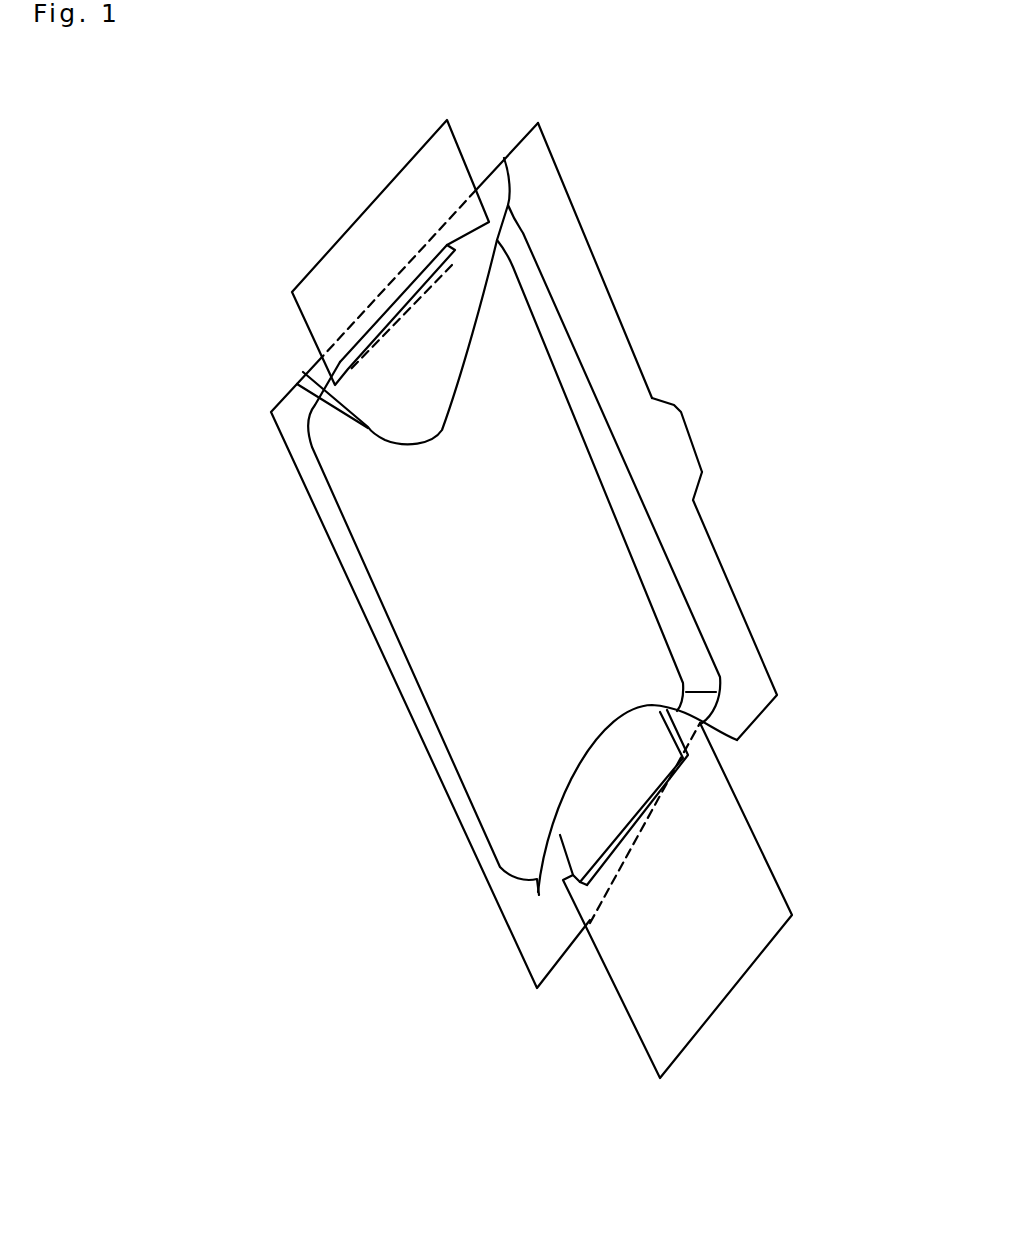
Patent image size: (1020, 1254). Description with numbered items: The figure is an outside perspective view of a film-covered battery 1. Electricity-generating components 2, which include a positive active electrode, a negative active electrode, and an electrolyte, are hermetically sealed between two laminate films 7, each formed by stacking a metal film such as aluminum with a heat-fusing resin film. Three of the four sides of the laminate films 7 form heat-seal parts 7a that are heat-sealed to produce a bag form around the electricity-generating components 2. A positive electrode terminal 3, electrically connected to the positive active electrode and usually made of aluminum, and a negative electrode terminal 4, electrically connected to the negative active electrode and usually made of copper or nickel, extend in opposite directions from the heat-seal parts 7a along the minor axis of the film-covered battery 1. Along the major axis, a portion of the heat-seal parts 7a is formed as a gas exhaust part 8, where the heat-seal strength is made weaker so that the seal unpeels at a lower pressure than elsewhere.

The film-covered battery 1 is at (108, 276).
The electricity-generating components 2 is at (395, 410).
The positive electrode terminal 3 is at (423, 185).
The negative electrode terminal 4 is at (738, 853).
The laminate film 7 is at (310, 587).
The heat-seal parts 7a is at (597, 312).
The gas exhaust part 8 is at (673, 438).